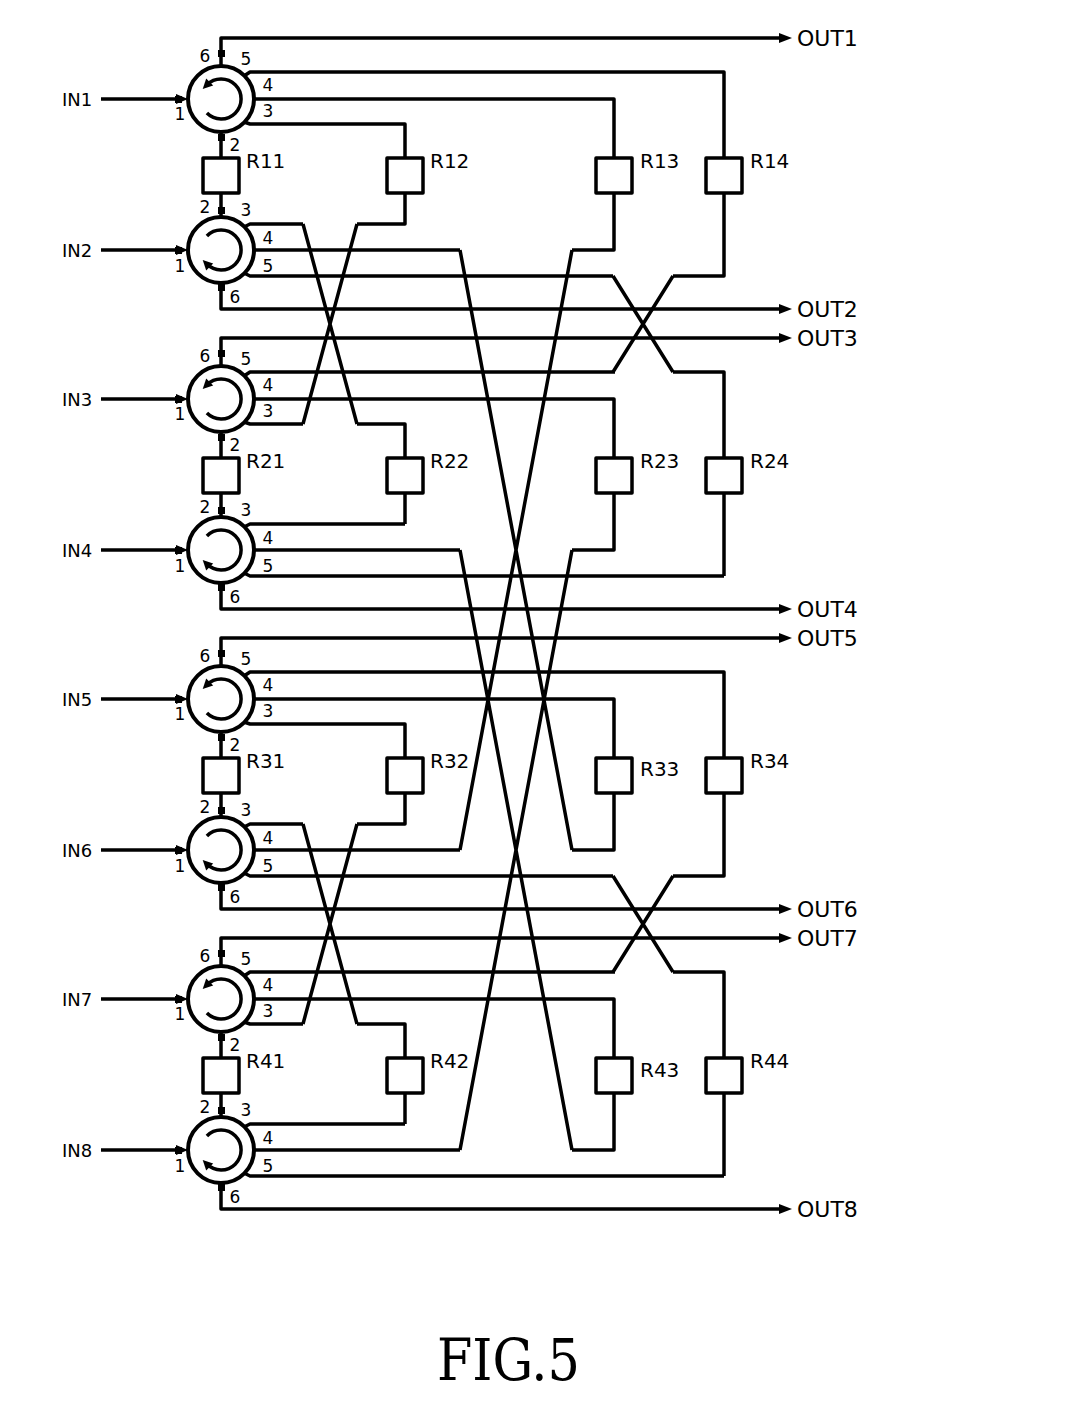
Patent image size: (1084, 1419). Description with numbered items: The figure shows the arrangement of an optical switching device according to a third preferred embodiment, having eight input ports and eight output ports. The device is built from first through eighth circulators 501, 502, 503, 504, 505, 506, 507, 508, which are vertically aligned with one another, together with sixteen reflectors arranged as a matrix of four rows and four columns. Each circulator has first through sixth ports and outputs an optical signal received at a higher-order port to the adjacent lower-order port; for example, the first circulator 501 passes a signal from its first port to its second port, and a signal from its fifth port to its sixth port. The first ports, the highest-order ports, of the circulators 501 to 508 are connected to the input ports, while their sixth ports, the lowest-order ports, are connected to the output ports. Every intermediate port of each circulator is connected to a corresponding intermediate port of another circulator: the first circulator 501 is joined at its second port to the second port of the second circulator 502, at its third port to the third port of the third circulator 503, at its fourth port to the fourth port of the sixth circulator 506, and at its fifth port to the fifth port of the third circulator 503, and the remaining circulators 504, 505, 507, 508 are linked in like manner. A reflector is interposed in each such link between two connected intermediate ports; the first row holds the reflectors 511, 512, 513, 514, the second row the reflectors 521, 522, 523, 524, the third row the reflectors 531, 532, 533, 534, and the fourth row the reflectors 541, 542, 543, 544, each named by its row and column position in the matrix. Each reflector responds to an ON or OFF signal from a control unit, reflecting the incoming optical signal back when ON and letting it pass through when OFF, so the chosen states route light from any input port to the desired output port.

The first circulator 501 is at (192, 86).
The second circulator 502 is at (192, 241).
The third circulator 503 is at (192, 386).
The fourth circulator 504 is at (192, 541).
The fifth circulator 505 is at (192, 686).
The sixth circulator 506 is at (192, 841).
The seventh circulator 507 is at (192, 986).
The eighth circulator 508 is at (192, 1141).
The R11 reflector 511 is at (179, 165).
The R12 reflector 512 is at (364, 186).
The R13 reflector 513 is at (572, 187).
The R14 reflector 514 is at (682, 189).
The R21 reflector 521 is at (179, 465).
The R22 reflector 522 is at (364, 486).
The R23 reflector 523 is at (590, 491).
The R24 reflector 524 is at (684, 488).
The R31 reflector 531 is at (179, 765).
The R32 reflector 532 is at (364, 786).
The R33 reflector 533 is at (646, 758).
The R34 reflector 534 is at (684, 788).
The R41 reflector 541 is at (179, 1065).
The R42 reflector 542 is at (364, 1086).
The R43 reflector 543 is at (646, 1058).
The R44 reflector 544 is at (684, 1088).